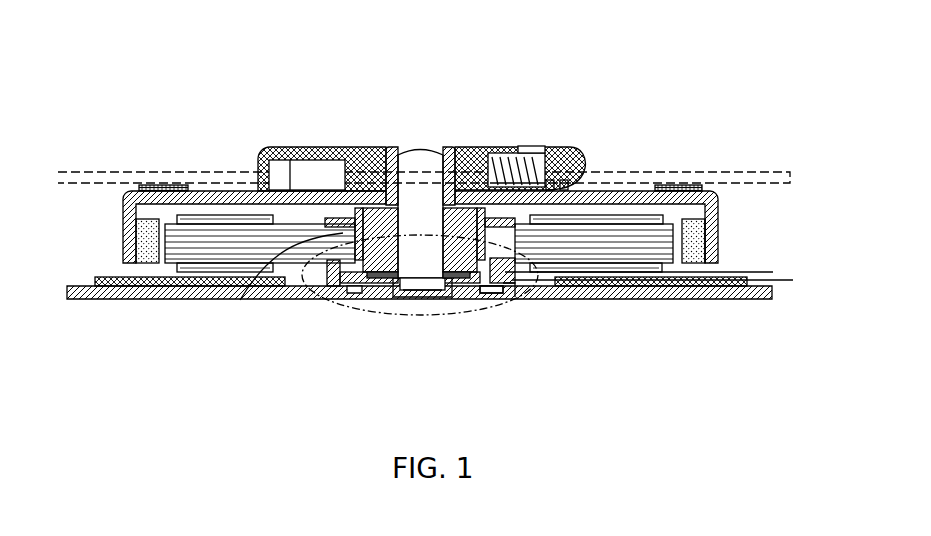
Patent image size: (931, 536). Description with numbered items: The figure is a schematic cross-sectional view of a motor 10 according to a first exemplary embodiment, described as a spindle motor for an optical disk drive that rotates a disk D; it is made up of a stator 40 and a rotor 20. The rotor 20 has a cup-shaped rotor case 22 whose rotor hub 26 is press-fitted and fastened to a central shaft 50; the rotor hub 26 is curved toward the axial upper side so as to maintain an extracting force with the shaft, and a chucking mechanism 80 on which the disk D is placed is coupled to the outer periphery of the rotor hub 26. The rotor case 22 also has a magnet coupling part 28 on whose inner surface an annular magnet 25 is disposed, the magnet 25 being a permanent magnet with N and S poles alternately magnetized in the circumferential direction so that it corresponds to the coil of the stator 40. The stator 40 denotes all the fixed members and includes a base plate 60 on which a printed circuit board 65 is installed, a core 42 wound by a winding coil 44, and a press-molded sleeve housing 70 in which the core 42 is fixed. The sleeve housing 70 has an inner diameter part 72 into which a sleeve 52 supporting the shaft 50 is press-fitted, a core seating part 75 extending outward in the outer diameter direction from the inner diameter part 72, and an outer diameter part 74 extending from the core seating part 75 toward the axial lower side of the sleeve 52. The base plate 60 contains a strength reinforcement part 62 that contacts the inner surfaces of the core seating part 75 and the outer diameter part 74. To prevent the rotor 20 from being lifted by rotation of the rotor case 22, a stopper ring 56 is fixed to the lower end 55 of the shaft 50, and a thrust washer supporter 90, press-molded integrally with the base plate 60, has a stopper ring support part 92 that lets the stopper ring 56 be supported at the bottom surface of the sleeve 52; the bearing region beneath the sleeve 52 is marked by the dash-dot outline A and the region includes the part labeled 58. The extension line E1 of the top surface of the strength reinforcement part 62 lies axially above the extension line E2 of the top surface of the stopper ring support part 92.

The motor 10 is at (435, 52).
The rotor 20 is at (722, 199).
The rotor case 22 is at (630, 190).
The magnet 25 is at (698, 232).
The rotor hub 26 is at (447, 150).
The magnet coupling part 28 is at (718, 243).
The stator 40 is at (666, 266).
The core 42 is at (603, 250).
The winding coil 44 is at (628, 265).
The shaft 50 is at (412, 160).
The sleeve 52 is at (492, 298).
The lower end 55 is at (416, 297).
The stopper ring 56 is at (450, 290).
The bearing 58 is at (432, 297).
The base plate 60 is at (716, 288).
The strength reinforcement part 62 is at (483, 292).
The printed circuit board 65 is at (752, 297).
The sleeve housing 70 is at (344, 233).
The inner diameter part 72 is at (358, 252).
The outer diameter part 74 is at (330, 262).
The core seating part 75 is at (340, 275).
The chucking mechanism 80 is at (470, 150).
The thrust washer supporter 90 is at (392, 303).
The stopper ring support part 92 is at (370, 290).
The region A is at (505, 316).
The disk D is at (766, 175).
The extension line of a top surface of the strength reinforcement part E1 is at (651, 267).
The extension line of a top surface of the stopper ring support part E2 is at (664, 283).